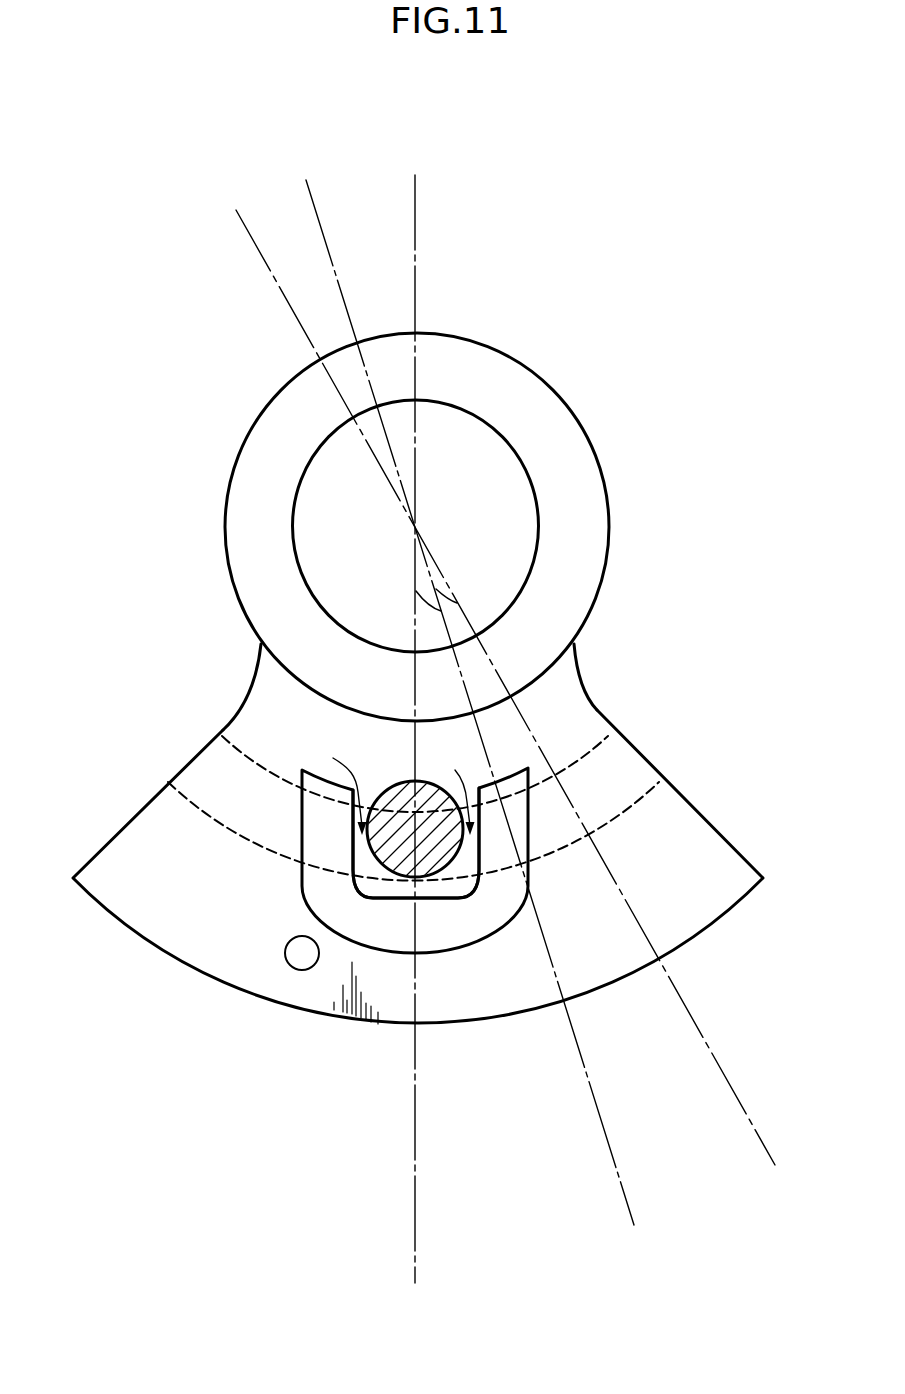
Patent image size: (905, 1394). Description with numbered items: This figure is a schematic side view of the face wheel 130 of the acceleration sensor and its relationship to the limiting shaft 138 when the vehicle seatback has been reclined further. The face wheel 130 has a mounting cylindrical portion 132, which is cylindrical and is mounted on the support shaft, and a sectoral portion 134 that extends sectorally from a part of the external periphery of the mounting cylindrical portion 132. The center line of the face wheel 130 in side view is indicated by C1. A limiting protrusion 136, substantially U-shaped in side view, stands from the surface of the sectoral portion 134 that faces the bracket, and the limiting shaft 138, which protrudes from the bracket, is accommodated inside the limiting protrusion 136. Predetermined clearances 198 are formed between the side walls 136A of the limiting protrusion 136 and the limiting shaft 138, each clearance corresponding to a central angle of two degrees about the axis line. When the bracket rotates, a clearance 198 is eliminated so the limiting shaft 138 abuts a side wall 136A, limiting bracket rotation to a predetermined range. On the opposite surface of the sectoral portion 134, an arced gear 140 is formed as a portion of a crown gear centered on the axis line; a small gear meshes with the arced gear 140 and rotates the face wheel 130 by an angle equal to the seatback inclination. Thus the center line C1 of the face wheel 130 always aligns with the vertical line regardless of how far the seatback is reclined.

The face wheel 130 is at (250, 661).
The mounting cylindrical portion 132 is at (240, 499).
The sectoral portion 134 is at (115, 905).
The limiting protrusion 136 is at (473, 953).
The side walls 136A is at (301, 827).
The limiting shaft 138 is at (402, 785).
The arced gear 140 is at (657, 783).
The clearances 198 is at (344, 753).
The center line C1 is at (418, 1222).